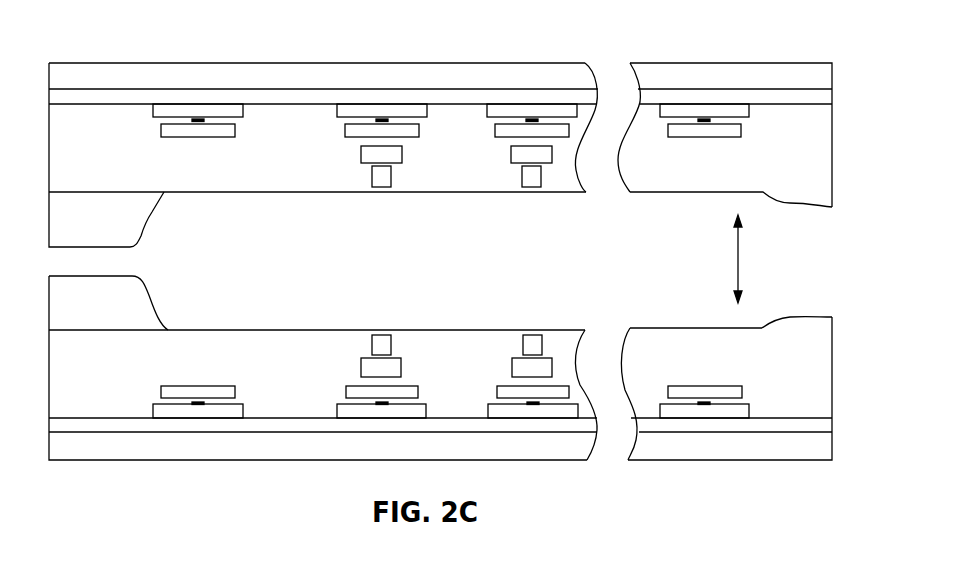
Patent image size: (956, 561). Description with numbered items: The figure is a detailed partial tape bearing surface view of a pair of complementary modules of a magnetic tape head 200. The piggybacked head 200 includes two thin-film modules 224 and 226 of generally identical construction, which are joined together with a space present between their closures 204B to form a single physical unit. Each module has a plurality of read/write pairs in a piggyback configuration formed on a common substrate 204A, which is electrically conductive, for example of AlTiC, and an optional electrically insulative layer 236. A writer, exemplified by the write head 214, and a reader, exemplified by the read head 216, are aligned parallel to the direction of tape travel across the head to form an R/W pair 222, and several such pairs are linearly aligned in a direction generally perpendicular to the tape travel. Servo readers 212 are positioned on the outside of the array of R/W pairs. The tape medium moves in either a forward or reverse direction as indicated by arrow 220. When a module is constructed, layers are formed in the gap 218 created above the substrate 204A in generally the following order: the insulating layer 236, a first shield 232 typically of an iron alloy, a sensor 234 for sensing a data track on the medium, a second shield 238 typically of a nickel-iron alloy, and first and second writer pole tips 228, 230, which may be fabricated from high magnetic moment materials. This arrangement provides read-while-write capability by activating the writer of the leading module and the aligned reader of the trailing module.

The magnetic tape head 200 is at (373, 42).
The substrate 204A is at (179, 86).
The closure 204B is at (153, 232).
The servo reader 212 is at (238, 372).
The write head 214 is at (375, 333).
The read head 216 is at (366, 385).
The gap 218 is at (243, 193).
The arrow 220 is at (738, 265).
The R/W pair 222 is at (392, 302).
The thin-film module 224 is at (760, 63).
The thin-film module 226 is at (726, 406).
The first writer pole tip 228 is at (360, 373).
The second writer pole tip 230 is at (372, 343).
The first shield 232 is at (337, 410).
The sensor 234 is at (336, 395).
The insulating layer 236 is at (823, 410).
The second shield 238 is at (346, 392).